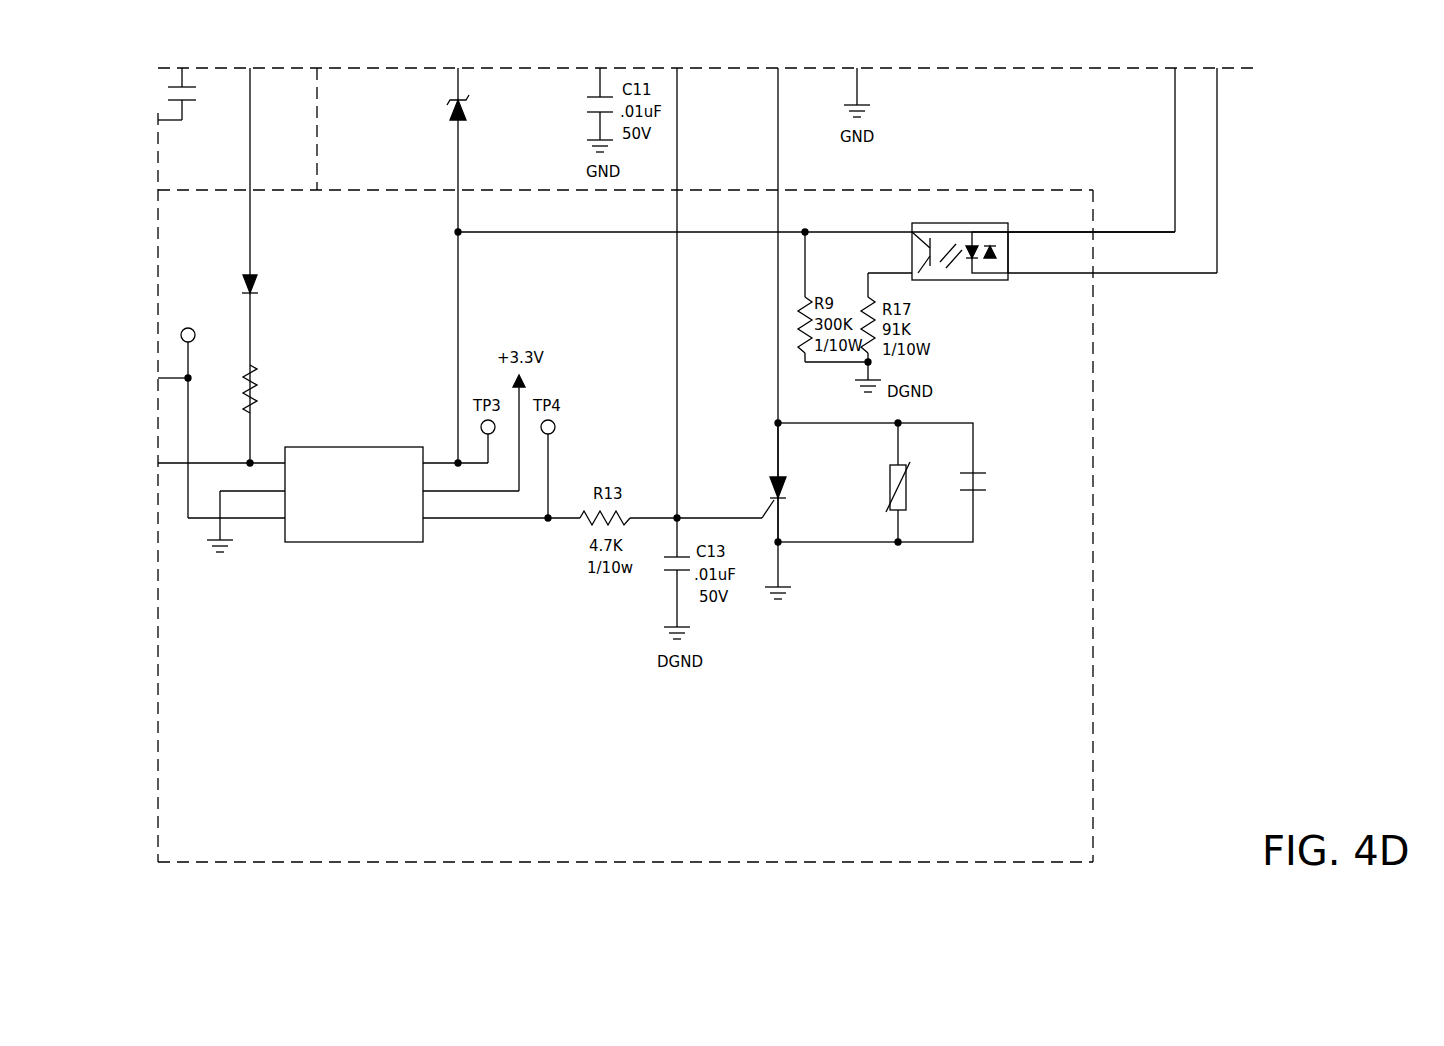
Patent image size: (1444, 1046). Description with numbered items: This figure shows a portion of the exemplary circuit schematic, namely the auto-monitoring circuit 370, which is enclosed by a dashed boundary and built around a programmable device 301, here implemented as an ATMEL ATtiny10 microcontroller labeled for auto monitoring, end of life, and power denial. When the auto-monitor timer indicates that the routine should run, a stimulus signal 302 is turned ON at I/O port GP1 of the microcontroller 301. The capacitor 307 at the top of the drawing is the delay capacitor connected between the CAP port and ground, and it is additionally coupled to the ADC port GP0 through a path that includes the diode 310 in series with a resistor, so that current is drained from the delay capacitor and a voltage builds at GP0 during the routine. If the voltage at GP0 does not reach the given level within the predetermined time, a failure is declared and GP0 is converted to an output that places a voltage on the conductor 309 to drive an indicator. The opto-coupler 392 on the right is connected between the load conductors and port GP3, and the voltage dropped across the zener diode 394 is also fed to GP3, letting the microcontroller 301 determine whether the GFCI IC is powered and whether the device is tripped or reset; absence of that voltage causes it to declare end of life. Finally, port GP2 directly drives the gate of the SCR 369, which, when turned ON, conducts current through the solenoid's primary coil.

The capacitor 307 is at (195, 112).
The zener diode 394 is at (450, 100).
The diode 310 is at (262, 262).
The programmable device 301 is at (260, 360).
The conductor 309 is at (214, 463).
The stimulus signal 302 is at (188, 520).
The SCR 369 is at (774, 472).
The opto-coupler 392 is at (1012, 282).
The auto-monitoring circuit 370 is at (1093, 408).